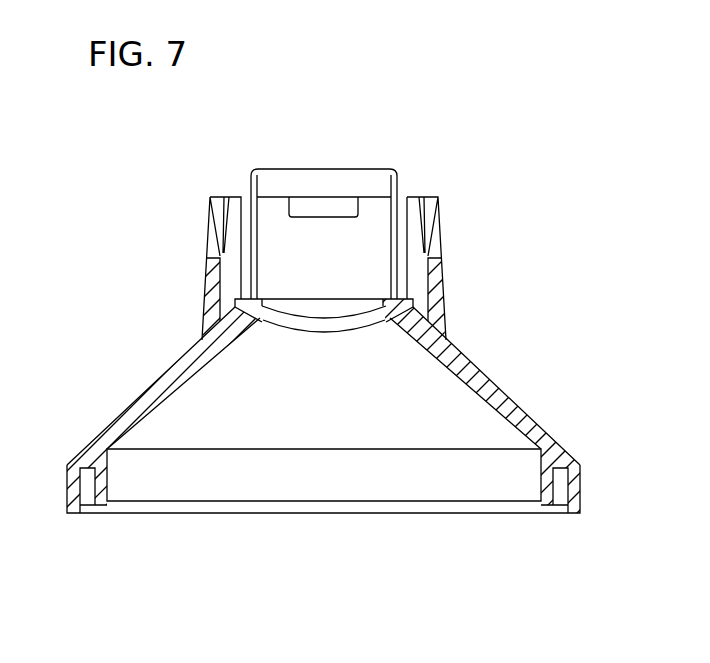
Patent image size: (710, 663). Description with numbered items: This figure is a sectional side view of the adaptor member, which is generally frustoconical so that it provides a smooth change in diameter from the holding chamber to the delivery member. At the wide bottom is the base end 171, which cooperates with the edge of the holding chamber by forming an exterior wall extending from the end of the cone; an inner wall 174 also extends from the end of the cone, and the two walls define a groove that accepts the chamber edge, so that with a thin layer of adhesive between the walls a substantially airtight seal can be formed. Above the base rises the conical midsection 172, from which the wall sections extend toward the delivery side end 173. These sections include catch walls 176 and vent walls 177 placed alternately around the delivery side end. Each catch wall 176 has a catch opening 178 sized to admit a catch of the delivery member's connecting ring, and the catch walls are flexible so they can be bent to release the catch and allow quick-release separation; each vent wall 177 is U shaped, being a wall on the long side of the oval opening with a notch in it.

The base end 171 is at (581, 490).
The conical midsection 172 is at (490, 380).
The delivery side end 173 is at (488, 165).
The inner wall 174 is at (543, 472).
The catch wall 176 is at (358, 257).
The vent wall 177 is at (206, 260).
The catch opening 178 is at (333, 207).